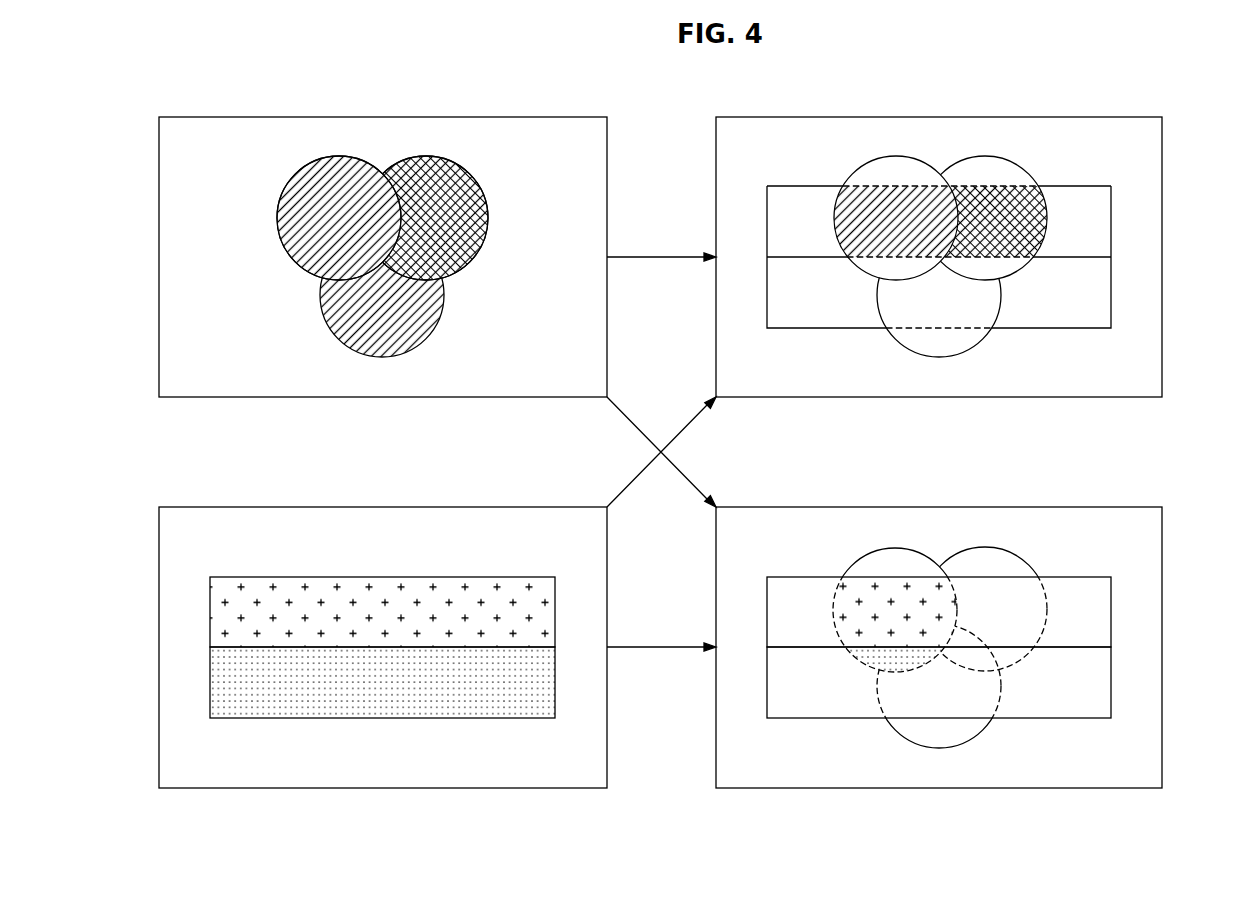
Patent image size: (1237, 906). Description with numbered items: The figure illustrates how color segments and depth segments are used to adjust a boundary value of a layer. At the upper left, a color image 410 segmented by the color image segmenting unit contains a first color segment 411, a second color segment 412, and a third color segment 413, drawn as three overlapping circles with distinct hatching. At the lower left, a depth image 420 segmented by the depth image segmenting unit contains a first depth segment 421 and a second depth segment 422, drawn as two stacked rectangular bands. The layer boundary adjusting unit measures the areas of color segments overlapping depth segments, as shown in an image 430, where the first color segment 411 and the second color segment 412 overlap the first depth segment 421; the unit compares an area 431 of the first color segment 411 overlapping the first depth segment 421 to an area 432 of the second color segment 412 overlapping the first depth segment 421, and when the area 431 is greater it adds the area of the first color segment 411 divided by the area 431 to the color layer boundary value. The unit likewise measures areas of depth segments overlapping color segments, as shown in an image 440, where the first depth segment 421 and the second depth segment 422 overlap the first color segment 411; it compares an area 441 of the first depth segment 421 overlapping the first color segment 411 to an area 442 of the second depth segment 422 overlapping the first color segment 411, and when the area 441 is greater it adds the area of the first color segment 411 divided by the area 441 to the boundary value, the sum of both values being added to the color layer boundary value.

The color image 410 is at (383, 117).
The first color segment 411 is at (277, 217).
The second color segment 412 is at (488, 218).
The third color segment 413 is at (444, 300).
The depth image 420 is at (383, 507).
The first depth segment 421 is at (383, 577).
The second depth segment 422 is at (383, 718).
The image 430 is at (940, 117).
The area 431 is at (898, 212).
The area 432 is at (1028, 207).
The image 440 is at (940, 507).
The area 441 is at (848, 598).
The area 442 is at (873, 657).